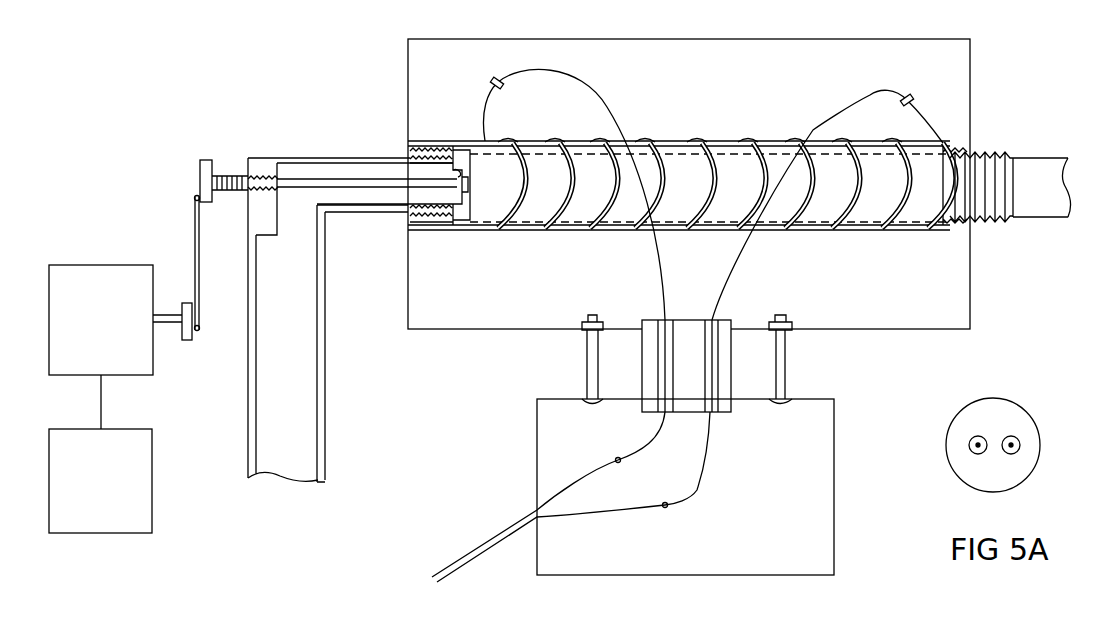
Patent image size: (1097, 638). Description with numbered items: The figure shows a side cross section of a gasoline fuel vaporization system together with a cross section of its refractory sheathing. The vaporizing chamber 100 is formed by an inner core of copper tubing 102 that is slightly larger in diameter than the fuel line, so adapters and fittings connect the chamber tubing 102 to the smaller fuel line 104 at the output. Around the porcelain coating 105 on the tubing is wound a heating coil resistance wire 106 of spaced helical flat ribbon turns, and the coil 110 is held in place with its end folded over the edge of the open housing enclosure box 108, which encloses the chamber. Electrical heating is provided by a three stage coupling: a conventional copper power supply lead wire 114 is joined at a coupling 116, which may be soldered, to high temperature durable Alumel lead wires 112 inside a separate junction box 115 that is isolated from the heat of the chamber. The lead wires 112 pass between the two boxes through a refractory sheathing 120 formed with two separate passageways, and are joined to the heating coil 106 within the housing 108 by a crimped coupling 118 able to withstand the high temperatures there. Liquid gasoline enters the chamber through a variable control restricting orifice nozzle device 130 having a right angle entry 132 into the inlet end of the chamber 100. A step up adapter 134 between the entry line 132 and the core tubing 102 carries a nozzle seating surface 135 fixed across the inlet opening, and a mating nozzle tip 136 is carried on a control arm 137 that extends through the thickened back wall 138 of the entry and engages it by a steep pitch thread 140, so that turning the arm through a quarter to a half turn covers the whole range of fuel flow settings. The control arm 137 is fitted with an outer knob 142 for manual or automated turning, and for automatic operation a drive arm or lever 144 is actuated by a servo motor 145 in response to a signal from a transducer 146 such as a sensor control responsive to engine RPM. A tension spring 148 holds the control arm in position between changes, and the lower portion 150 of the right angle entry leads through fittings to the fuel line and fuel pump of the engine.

In FIG. 5, the vaporizing chamber 100 is at (826, 245).
In FIG. 5, the copper tubing 102 is at (458, 233).
In FIG. 5, the fuel line 104 is at (1043, 222).
In FIG. 5, the coating 105 is at (605, 233).
In FIG. 5, the heating coil resistance wire 106 is at (713, 140).
In FIG. 5, the housing enclosure box 108 is at (864, 330).
In FIG. 5, the heating coil 110 is at (517, 233).
In FIG. 5, the lead wires 112 is at (598, 100).
In FIG. 5, the power supply lead wire 114 is at (472, 548).
In FIG. 5, the junction box 115 is at (835, 497).
In FIG. 5, the coupling 116 is at (667, 505).
In FIG. 5, the coupling 118 is at (493, 80).
In FIG. 5, the refractory sheathing 120 is at (730, 365).
In FIG. 5A, the refractory sheathing 120 is at (991, 398).
In FIG. 5, the variable control restricting orifice nozzle device 130 is at (336, 125).
In FIG. 5, the right angle entry 132 is at (250, 157).
In FIG. 5, the step up adapter 134 is at (410, 152).
In FIG. 5, the nozzle seating surface 135 is at (458, 172).
In FIG. 5, the nozzle tip 136 is at (468, 186).
In FIG. 5, the control arm 137 is at (355, 190).
In FIG. 5, the back wall 138 is at (258, 232).
In FIG. 5, the steep pitch thread 140 is at (265, 192).
In FIG. 5, the outer knob 142 is at (201, 178).
In FIG. 5, the link 144 is at (194, 238).
In FIG. 5, the servo motor 145 is at (68, 262).
In FIG. 5, the transducer 146 is at (100, 535).
In FIG. 5, the tension spring 148 is at (225, 170).
In FIG. 5, the lower portion 150 is at (322, 377).